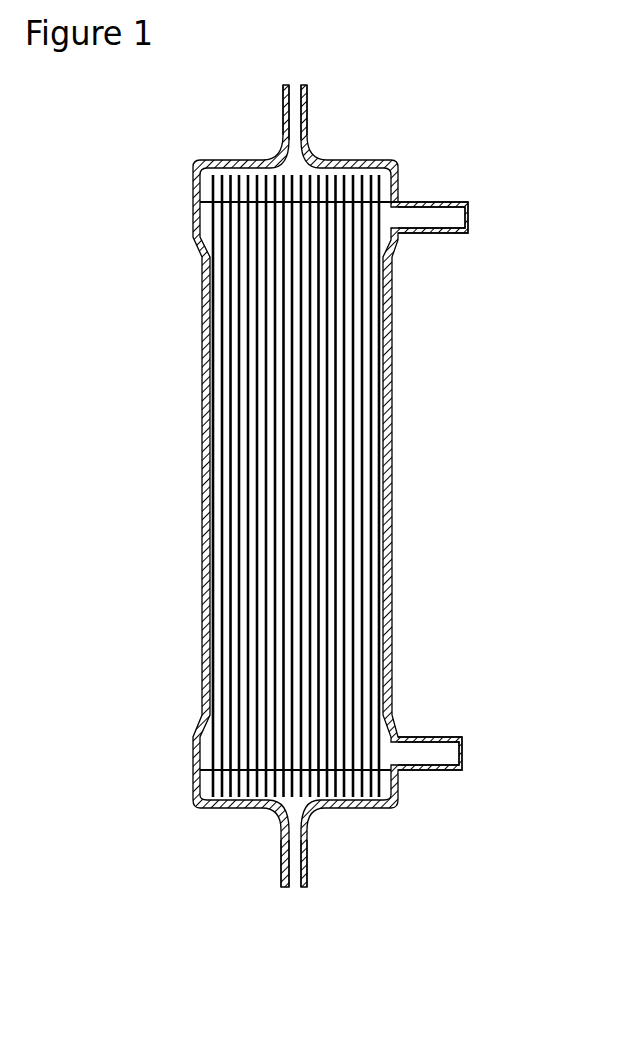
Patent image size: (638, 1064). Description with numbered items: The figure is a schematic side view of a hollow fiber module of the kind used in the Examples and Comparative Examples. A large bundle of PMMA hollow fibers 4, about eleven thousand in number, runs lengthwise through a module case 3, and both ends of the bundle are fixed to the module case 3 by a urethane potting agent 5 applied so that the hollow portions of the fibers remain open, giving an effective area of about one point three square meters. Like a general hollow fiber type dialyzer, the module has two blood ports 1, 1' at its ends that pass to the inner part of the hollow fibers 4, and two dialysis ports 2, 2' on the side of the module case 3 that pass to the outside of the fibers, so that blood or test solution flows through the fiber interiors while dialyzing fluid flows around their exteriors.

The blood port 1 is at (343, 94).
The blood port 1' is at (348, 873).
The dialysis port 2 is at (456, 199).
The dialysis port 2' is at (482, 742).
The module case 3 is at (387, 360).
The hollow fiber 4 is at (357, 323).
The potting agent 5 is at (198, 215).